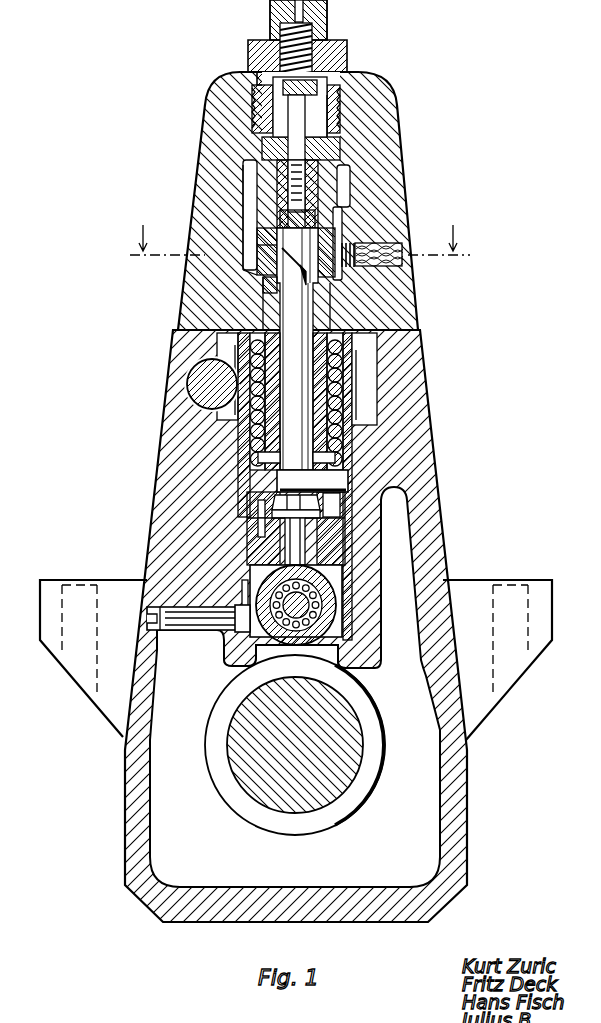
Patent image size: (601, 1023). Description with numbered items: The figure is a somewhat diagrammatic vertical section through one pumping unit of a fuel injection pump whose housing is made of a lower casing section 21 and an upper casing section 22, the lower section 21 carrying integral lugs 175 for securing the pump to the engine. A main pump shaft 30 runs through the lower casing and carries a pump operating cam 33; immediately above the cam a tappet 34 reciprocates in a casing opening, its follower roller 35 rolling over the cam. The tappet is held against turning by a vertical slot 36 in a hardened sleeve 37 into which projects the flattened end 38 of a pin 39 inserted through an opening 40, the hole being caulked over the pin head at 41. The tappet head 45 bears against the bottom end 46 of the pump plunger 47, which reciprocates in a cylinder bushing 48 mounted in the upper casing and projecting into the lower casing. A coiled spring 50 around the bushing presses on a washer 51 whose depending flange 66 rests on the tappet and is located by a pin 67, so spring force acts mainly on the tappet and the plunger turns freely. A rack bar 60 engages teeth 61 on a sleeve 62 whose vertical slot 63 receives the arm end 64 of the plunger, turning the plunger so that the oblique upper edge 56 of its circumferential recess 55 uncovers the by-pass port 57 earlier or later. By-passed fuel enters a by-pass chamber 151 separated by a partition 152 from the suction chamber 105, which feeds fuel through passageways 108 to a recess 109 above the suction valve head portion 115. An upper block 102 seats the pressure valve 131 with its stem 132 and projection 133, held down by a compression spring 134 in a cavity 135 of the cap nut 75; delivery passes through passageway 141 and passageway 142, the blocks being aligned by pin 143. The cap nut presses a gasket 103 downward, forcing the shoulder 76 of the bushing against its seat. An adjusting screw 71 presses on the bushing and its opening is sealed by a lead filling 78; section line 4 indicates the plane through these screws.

The section line 4- 4 is at (295, 240).
The lower casing section 21 is at (412, 420).
The upper casing section 22 is at (378, 100).
The main pump shaft 30 is at (295, 745).
The pump operating cam 33 is at (212, 725).
The tappet 34 is at (337, 545).
The follower roller 35 is at (328, 641).
The vertical slot 36 is at (240, 596).
The hardened sleeve or bushing 37 is at (347, 612).
The flattened end of pin 38 is at (246, 646).
The pin 39 is at (185, 622).
The opening in housing 40 is at (147, 640).
The caulked portion 41 is at (147, 610).
The tappet head 45 is at (306, 520).
The bottom end of pump plunger 46 is at (262, 490).
The pump plunger 47 is at (330, 325).
The cylinder bushing 48 is at (300, 326).
The coiled spring 50 is at (355, 342).
The washer 51 is at (346, 470).
The circumferential recess 55 is at (322, 300).
The oblique upper edge 56 is at (292, 255).
The by-pass port 57 is at (265, 282).
The rack bar 60 is at (200, 385).
The teeth 61 is at (347, 370).
The sleeve 62 is at (400, 390).
The vertical slot 63 is at (345, 505).
The arm end 64 is at (370, 485).
The depending flange 66 is at (262, 498).
The pin 67 is at (255, 521).
The adjusting screw 71 is at (385, 258).
The cap nut 75 is at (270, 20).
The shoulder 76 is at (255, 297).
The lead filling 78 is at (390, 265).
The upper block 102 is at (330, 105).
The gasket 103 is at (338, 140).
The suction chamber 105 is at (348, 177).
The fuel passageway 108 is at (325, 200).
The recess 109 is at (338, 215).
The valve head portion 115 is at (262, 232).
The pressure valve 131 is at (258, 100).
The valve stem 132 is at (290, 128).
The projection 133 is at (275, 77).
The coiled compression spring 134 is at (287, 43).
The cavity 135 is at (320, 33).
The fuel delivery passageway 141 is at (260, 188).
The passageway 142 is at (308, 148).
The pin 143 is at (330, 162).
The by-pass chamber 151 is at (250, 268).
The partition 152 is at (248, 218).
The lug 175 is at (112, 595).